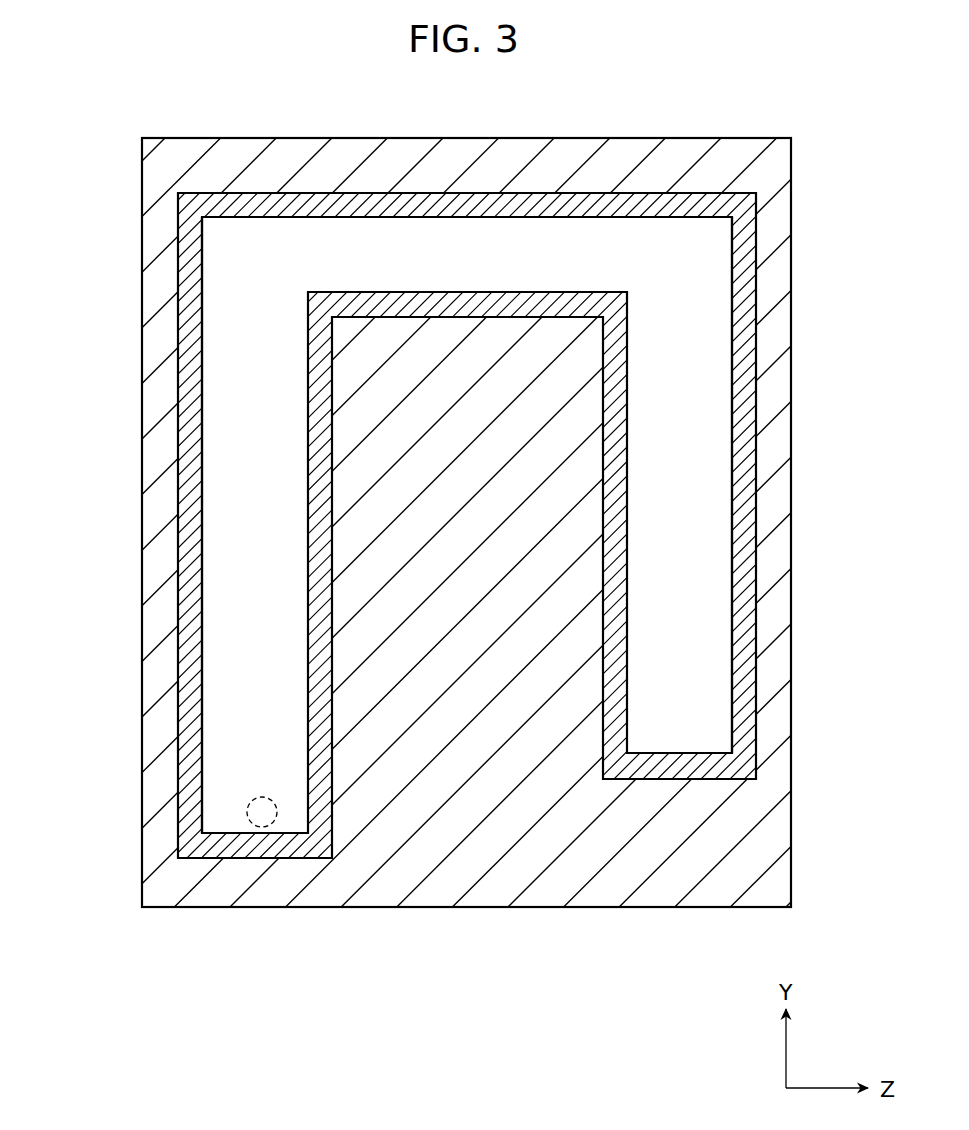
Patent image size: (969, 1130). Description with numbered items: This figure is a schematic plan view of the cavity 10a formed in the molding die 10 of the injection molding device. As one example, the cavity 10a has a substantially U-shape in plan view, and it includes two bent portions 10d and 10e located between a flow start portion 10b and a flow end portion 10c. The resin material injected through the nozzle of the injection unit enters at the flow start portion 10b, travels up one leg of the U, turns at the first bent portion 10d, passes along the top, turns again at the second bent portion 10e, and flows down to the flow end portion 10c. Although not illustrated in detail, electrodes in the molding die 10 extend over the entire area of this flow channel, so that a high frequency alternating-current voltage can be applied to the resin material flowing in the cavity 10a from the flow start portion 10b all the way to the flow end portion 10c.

The molding die 10 is at (478, 490).
The cavity 10a is at (686, 525).
The flow start portion 10b is at (247, 806).
The flow end portion 10c is at (686, 746).
The bent portion 10d is at (249, 258).
The bent portion 10e is at (685, 255).